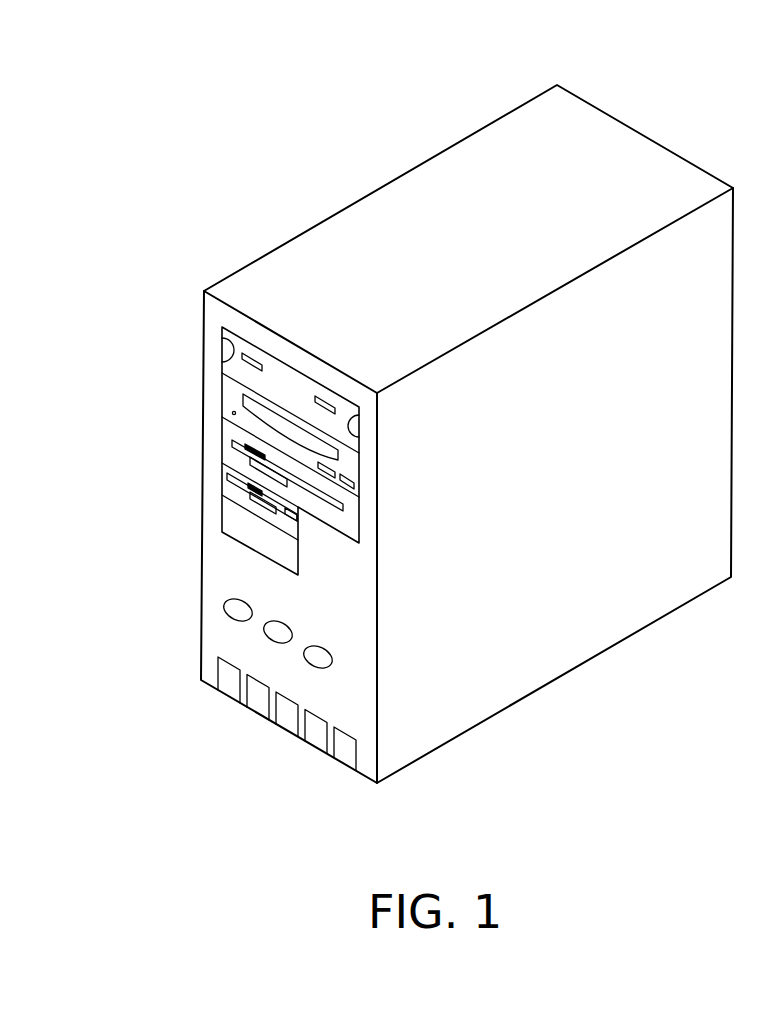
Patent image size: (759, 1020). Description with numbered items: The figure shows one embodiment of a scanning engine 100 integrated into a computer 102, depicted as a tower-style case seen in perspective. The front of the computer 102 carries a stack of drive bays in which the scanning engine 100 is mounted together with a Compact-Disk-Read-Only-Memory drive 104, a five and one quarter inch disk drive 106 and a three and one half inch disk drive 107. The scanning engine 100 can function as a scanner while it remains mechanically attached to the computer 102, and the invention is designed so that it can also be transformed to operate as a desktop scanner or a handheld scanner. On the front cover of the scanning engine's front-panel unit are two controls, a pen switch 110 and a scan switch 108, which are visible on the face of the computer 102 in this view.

The scanning engine 100 is at (343, 428).
The computer 102 is at (608, 148).
The CD-ROM drive 104 is at (347, 465).
The 5.25 inches disk drive 106 is at (346, 522).
The 3.5 inches disk drive 107 is at (232, 492).
The scan switch 108 is at (251, 352).
The pen switch 110 is at (325, 396).